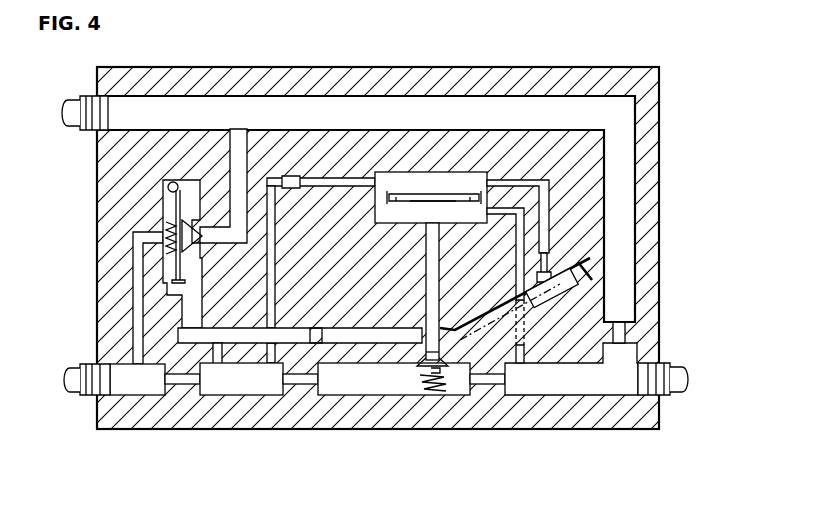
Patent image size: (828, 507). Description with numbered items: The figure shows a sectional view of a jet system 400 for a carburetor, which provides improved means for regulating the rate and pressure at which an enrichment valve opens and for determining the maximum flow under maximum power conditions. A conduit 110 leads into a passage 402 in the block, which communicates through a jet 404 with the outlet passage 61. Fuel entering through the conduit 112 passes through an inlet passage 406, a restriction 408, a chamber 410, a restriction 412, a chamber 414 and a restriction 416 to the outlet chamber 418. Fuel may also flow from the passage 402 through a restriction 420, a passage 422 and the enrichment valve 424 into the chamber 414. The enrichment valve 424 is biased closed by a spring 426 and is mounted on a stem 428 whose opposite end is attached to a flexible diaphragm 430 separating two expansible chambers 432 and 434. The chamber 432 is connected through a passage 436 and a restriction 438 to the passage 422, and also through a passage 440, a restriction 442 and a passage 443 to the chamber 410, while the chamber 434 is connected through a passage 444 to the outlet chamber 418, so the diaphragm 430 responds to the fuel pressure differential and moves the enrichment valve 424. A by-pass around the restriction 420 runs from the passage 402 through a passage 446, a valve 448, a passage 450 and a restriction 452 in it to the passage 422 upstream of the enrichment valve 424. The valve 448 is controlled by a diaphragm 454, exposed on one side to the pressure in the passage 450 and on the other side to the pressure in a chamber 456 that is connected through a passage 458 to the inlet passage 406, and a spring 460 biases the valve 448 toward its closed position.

The outlet passage 61 is at (682, 393).
The conduit 110 is at (72, 130).
The conduit 112 is at (82, 366).
The jet system 400 is at (452, 428).
The passage 402 is at (368, 118).
The jet 404 is at (620, 320).
The inlet passage 406 is at (141, 385).
The restriction 408 is at (186, 386).
The chamber 410 is at (240, 385).
The restriction 412 is at (295, 384).
The chamber 414 is at (392, 384).
The restriction 416 is at (503, 378).
The outlet chamber 418 is at (630, 386).
The restriction 420 is at (585, 270).
The passage 422 is at (478, 351).
The enrichment valve 424 is at (424, 367).
The spring 426 is at (421, 385).
The stem 428 is at (435, 275).
The flexible diaphragm 430 is at (431, 197).
The expansible chamber 432 is at (428, 192).
The expansible chamber 434 is at (420, 218).
The passage 436 is at (617, 170).
The restriction 438 is at (545, 265).
The passage 440 is at (331, 178).
The restriction 442 is at (292, 178).
The passage 443 is at (308, 345).
The passage 444 is at (523, 343).
The passage 446 is at (237, 147).
The valve 448 is at (125, 180).
The passage 450 is at (216, 350).
The restriction 452 is at (328, 343).
The diaphragm 454 is at (168, 190).
The chamber 456 is at (170, 209).
The passage 458 is at (140, 242).
The spring 460 is at (165, 255).